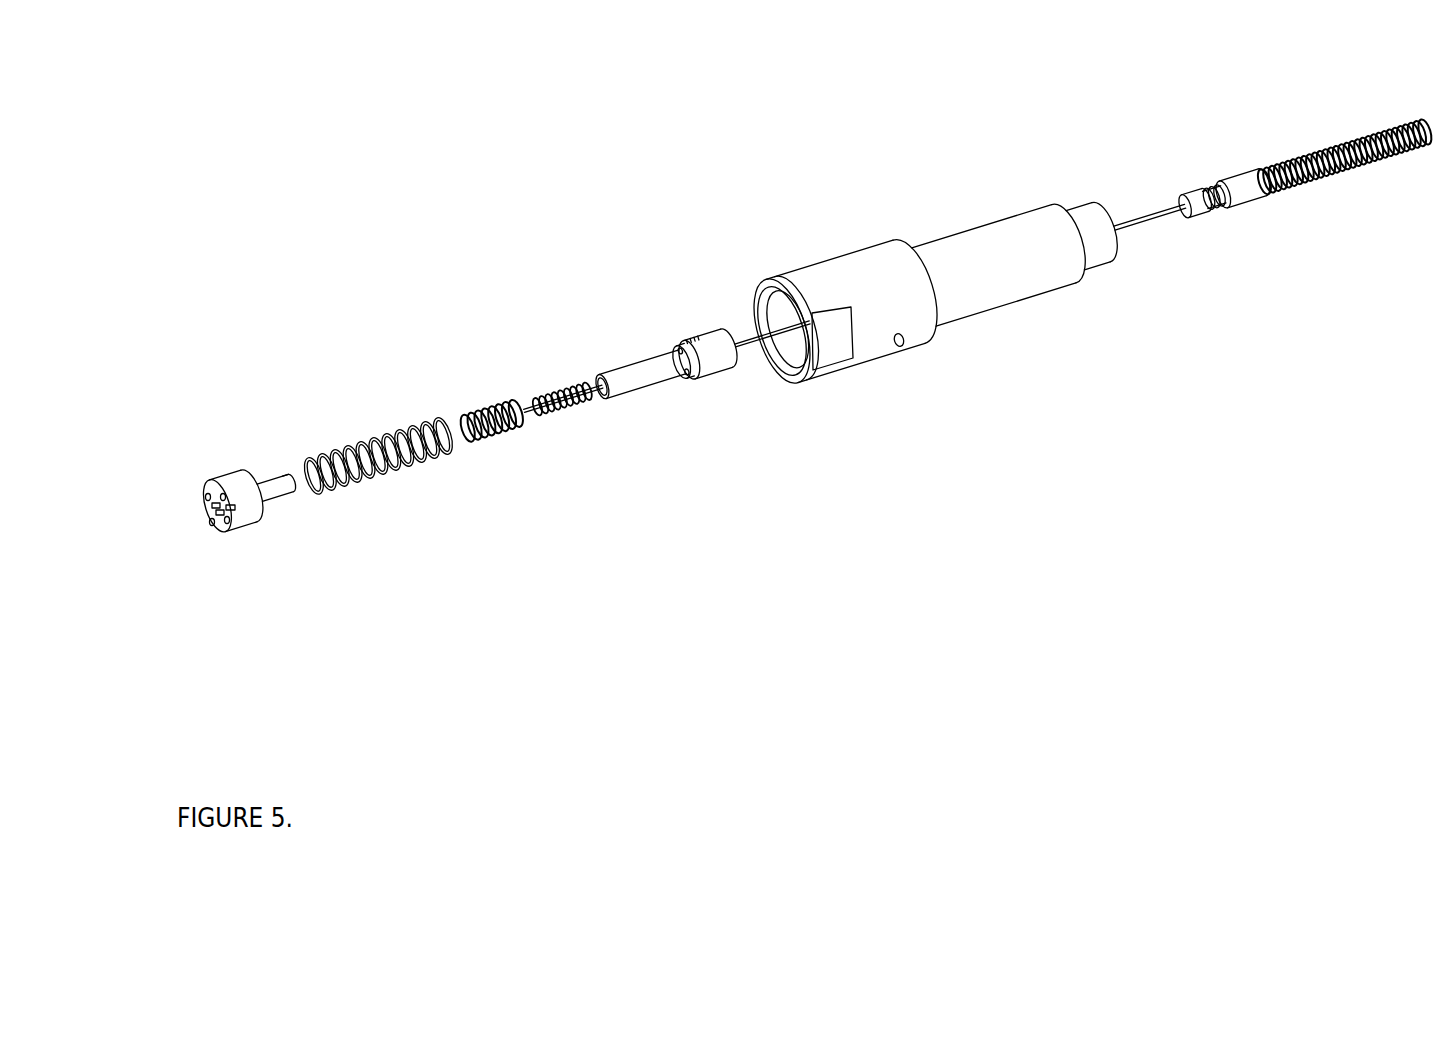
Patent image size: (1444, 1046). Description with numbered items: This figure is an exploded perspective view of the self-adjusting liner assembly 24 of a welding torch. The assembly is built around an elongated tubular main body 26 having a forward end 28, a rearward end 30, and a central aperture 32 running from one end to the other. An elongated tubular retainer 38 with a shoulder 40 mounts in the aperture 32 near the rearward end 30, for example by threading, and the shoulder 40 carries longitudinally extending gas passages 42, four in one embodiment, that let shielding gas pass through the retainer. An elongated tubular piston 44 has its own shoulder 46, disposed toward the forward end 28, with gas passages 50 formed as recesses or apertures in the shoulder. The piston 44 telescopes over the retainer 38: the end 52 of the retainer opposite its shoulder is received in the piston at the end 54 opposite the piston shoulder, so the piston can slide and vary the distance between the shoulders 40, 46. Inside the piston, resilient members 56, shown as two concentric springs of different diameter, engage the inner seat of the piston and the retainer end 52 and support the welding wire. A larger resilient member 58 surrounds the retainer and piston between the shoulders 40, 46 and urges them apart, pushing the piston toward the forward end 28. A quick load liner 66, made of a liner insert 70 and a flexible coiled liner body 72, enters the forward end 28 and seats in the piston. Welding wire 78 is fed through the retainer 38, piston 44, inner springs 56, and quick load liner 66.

The self-adjusting liner assembly 24 is at (613, 120).
The elongated tubular main body 26 is at (931, 305).
The forward end 28 is at (1157, 258).
The rearward end 30 is at (792, 358).
The central aperture 32 is at (741, 283).
The elongated tubular retainer 38 is at (307, 544).
The shoulder 40 is at (223, 428).
The gas passage 42 is at (161, 528).
The elongated tubular piston 44 is at (686, 445).
The shoulder 46 is at (634, 345).
The gas passage 50 is at (692, 366).
The end of the retainer 52 is at (290, 415).
The end of the piston 54 is at (550, 372).
The resilient member 56 is at (493, 437).
The resilient member 58 is at (449, 496).
The quick load liner 66 is at (1200, 137).
The liner insert 70 is at (1252, 228).
The flexible liner body 72 is at (1348, 174).
The welding wire 78 is at (1100, 169).